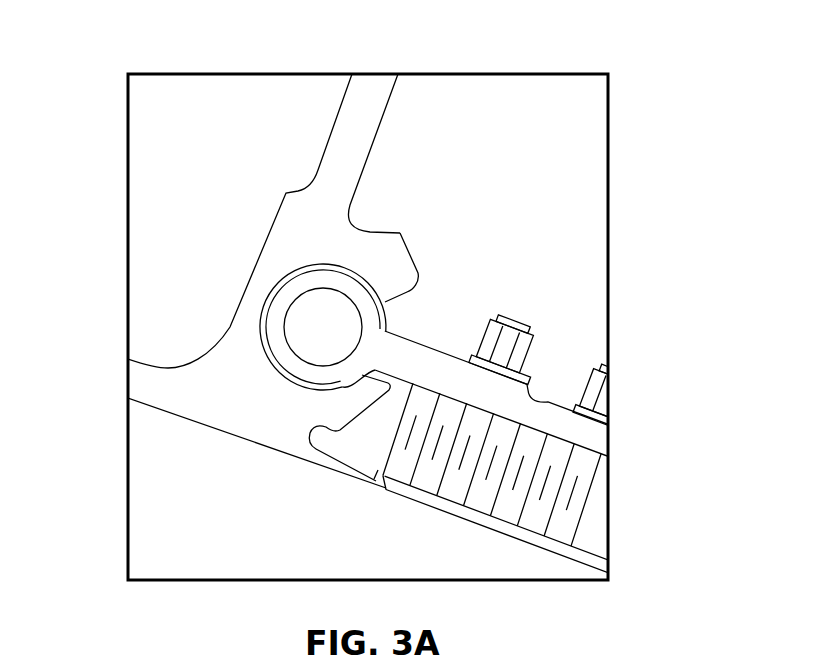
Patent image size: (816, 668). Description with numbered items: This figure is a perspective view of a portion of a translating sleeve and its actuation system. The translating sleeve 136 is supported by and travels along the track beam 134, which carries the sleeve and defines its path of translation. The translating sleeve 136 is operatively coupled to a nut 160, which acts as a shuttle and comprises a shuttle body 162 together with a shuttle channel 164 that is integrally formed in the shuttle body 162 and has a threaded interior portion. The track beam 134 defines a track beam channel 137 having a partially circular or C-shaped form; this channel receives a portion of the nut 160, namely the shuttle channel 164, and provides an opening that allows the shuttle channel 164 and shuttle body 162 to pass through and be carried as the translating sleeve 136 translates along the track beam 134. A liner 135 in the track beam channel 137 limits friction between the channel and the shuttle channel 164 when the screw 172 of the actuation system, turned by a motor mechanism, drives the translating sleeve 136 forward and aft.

The track beam 134 is at (388, 136).
The liner 135 is at (263, 323).
The translating sleeve 136 is at (470, 539).
The track beam channel 137 is at (365, 278).
The nut 160 is at (433, 334).
The shuttle body 162 is at (548, 399).
The shuttle channel 164 is at (310, 377).
The screw 172 is at (300, 308).